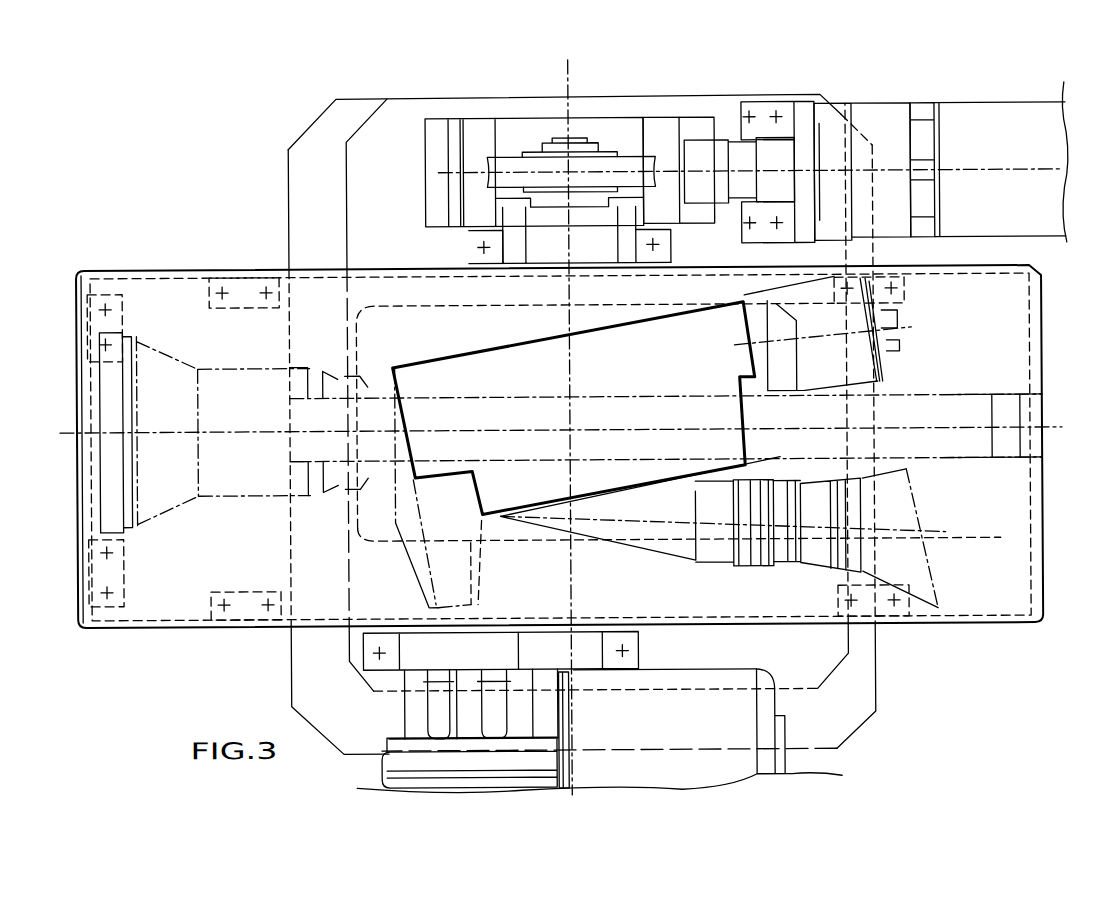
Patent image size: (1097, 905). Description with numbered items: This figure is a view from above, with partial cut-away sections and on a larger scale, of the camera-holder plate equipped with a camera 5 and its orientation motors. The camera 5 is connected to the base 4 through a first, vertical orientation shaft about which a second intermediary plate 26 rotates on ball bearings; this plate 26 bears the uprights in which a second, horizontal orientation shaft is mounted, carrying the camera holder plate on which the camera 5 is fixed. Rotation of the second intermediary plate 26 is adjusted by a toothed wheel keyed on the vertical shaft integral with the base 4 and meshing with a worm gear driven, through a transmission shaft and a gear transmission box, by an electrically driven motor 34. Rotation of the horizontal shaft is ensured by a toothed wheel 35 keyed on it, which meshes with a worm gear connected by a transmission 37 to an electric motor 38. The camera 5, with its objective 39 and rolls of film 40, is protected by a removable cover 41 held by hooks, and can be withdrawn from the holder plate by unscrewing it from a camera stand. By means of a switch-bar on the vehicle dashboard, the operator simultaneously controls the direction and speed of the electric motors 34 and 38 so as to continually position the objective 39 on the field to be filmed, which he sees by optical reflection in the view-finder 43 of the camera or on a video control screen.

The base 4 is at (845, 698).
The camera 5 is at (443, 519).
The second intermediary plate 26 is at (813, 645).
The electric motor 34 is at (713, 718).
The toothed wheel 35 is at (503, 177).
The transmission 37 is at (738, 160).
The electric motor 38 is at (1026, 199).
The objective 39 is at (155, 492).
The rolls of film 40 is at (457, 373).
The removable cover 41 is at (1006, 618).
The view-finder 43 is at (897, 518).